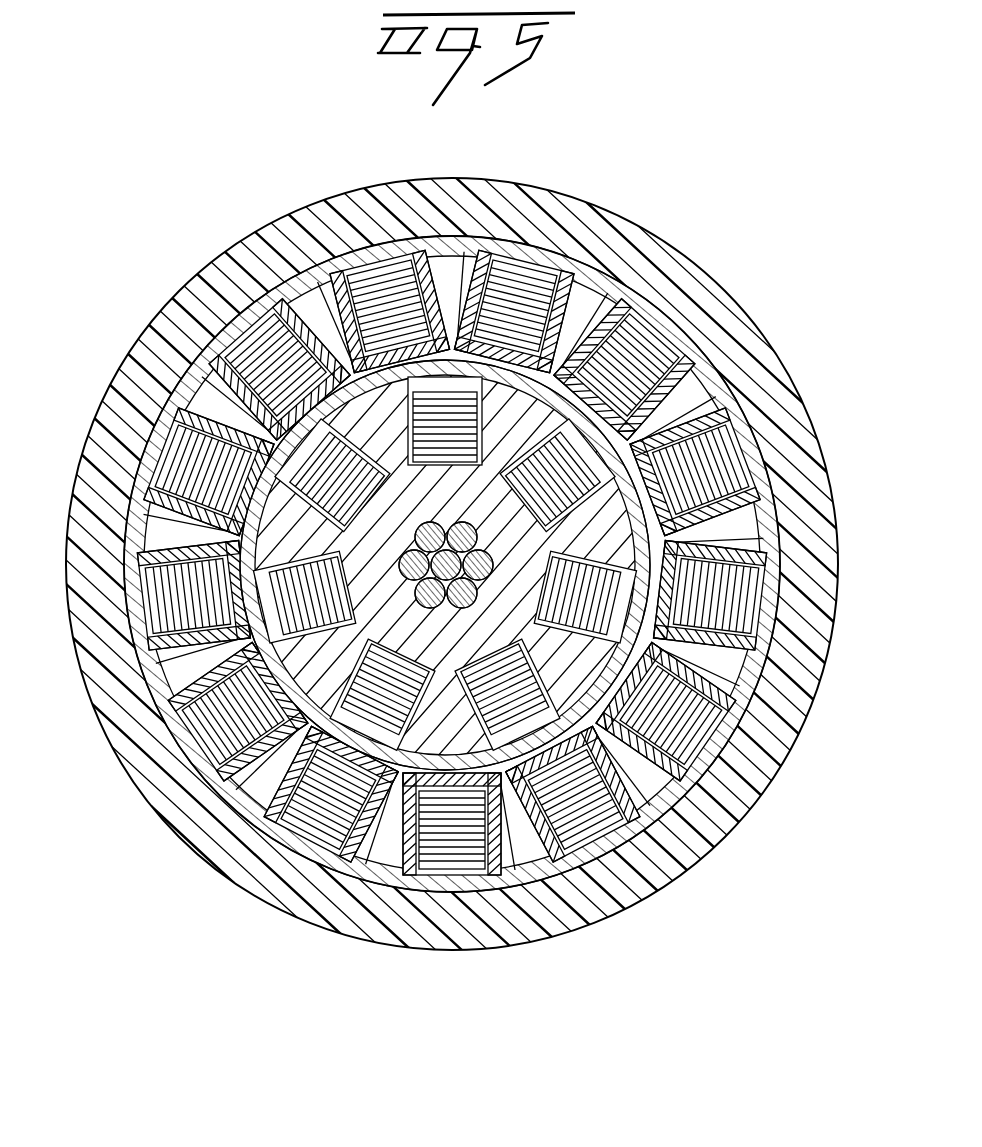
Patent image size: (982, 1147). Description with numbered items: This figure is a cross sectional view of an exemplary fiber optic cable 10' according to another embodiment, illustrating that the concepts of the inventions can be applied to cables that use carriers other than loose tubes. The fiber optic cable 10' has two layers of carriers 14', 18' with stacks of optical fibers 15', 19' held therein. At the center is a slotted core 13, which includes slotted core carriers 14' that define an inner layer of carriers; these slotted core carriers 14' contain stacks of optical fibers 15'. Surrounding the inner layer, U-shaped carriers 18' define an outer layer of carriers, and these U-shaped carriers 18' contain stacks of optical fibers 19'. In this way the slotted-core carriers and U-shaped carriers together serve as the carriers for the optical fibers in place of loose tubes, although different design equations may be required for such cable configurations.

The fiber optic cable 10' is at (434, 597).
The slotted core 13 is at (625, 905).
The slotted core carriers 14' is at (465, 920).
The stacks of optical fibers 15' is at (310, 838).
The U-shaped carriers 18' is at (404, 564).
The stacks of optical fibers 19' is at (265, 278).